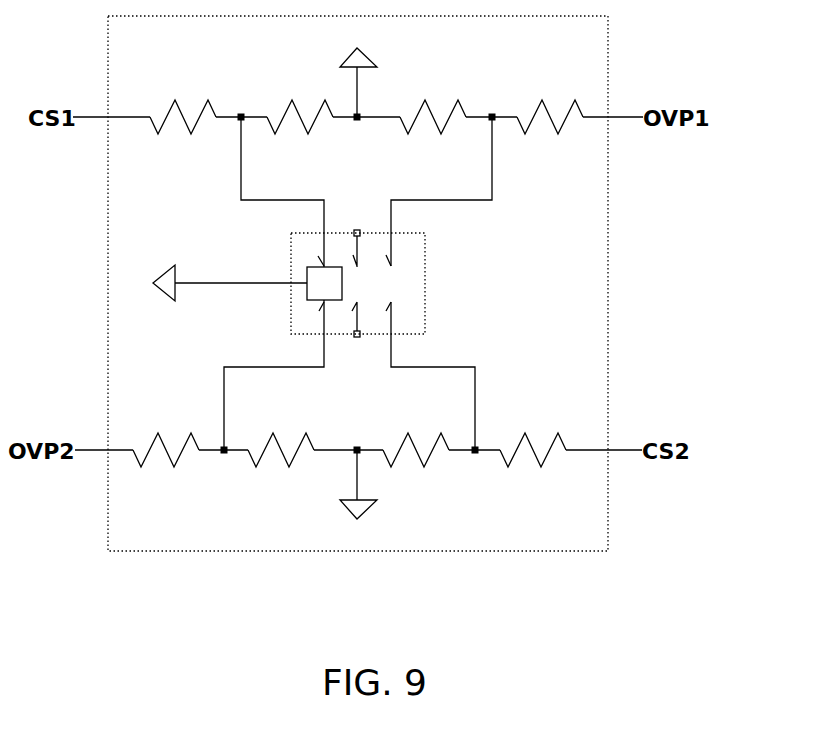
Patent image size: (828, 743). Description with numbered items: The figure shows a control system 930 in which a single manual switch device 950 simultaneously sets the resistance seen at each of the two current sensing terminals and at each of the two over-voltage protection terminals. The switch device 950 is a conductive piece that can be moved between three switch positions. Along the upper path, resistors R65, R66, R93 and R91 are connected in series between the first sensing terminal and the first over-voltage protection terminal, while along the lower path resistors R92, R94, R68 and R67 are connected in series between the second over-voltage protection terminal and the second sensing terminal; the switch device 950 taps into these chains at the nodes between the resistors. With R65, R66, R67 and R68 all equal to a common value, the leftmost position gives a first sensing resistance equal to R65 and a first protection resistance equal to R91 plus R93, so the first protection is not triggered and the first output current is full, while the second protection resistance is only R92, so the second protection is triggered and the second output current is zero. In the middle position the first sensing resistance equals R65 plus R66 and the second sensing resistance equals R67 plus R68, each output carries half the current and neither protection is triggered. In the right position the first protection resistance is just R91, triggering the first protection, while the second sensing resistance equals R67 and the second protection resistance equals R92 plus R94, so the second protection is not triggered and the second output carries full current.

The control system 930 is at (610, 367).
The single manual switch device 950 is at (423, 300).
The resistor R65 is at (183, 104).
The resistor R66 is at (300, 104).
The resistor R93 is at (433, 104).
The resistor R91 is at (550, 104).
The resistor R92 is at (166, 438).
The resistor R94 is at (281, 438).
The resistor R68 is at (416, 438).
The resistor R67 is at (533, 438).